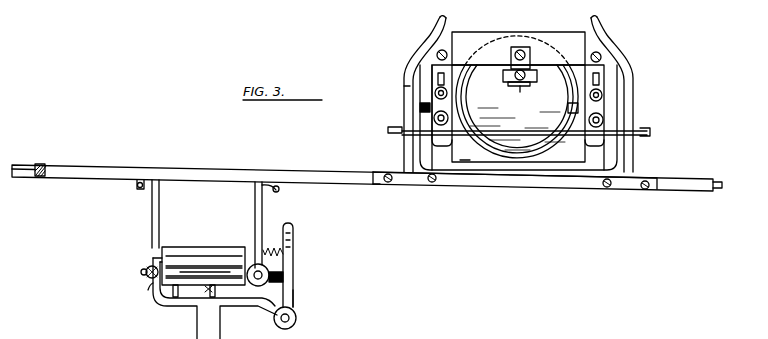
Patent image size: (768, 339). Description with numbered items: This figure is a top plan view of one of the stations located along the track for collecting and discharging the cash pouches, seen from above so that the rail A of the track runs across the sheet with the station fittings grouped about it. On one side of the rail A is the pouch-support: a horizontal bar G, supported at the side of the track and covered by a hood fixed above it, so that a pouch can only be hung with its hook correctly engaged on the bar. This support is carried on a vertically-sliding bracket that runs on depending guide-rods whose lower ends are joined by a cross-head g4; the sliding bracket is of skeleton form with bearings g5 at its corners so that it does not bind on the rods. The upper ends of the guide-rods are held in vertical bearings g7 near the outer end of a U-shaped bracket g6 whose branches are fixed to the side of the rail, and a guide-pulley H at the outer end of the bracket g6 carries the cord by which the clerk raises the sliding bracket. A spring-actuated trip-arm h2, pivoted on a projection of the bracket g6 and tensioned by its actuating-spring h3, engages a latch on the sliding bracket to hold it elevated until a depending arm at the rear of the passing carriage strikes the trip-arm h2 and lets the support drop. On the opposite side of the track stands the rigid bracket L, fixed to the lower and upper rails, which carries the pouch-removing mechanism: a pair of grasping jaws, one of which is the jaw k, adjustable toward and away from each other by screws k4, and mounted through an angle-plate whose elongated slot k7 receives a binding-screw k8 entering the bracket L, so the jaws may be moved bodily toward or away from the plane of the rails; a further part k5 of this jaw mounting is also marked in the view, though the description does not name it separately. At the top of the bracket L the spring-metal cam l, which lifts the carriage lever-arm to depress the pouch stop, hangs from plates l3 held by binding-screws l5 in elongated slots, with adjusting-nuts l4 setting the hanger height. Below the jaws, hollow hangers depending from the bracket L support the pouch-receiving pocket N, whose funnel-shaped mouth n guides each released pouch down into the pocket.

The rail A is at (21, 167).
The bracket L is at (470, 50).
The cam l is at (420, 107).
The plate l3 is at (437, 73).
The adjusting-nut l4 is at (436, 122).
The binding-screw l5 is at (436, 83).
The pouch-receiving pocket N is at (517, 97).
The funnel-shaped mouth n is at (465, 152).
The jaw k is at (503, 78).
The screw k4 is at (531, 93).
The clamp bracket k5 is at (570, 106).
The elongated slot k7 is at (537, 68).
The binding-screw k8 is at (521, 50).
The bar G is at (153, 266).
The cross-head g4 is at (194, 293).
The bearing g5 is at (146, 273).
The U-shaped bracket g6 is at (256, 217).
The vertical bearing g7 is at (151, 290).
The guide-pulley H is at (217, 294).
The trip-arm h2 is at (293, 293).
The actuating-spring h3 is at (293, 239).